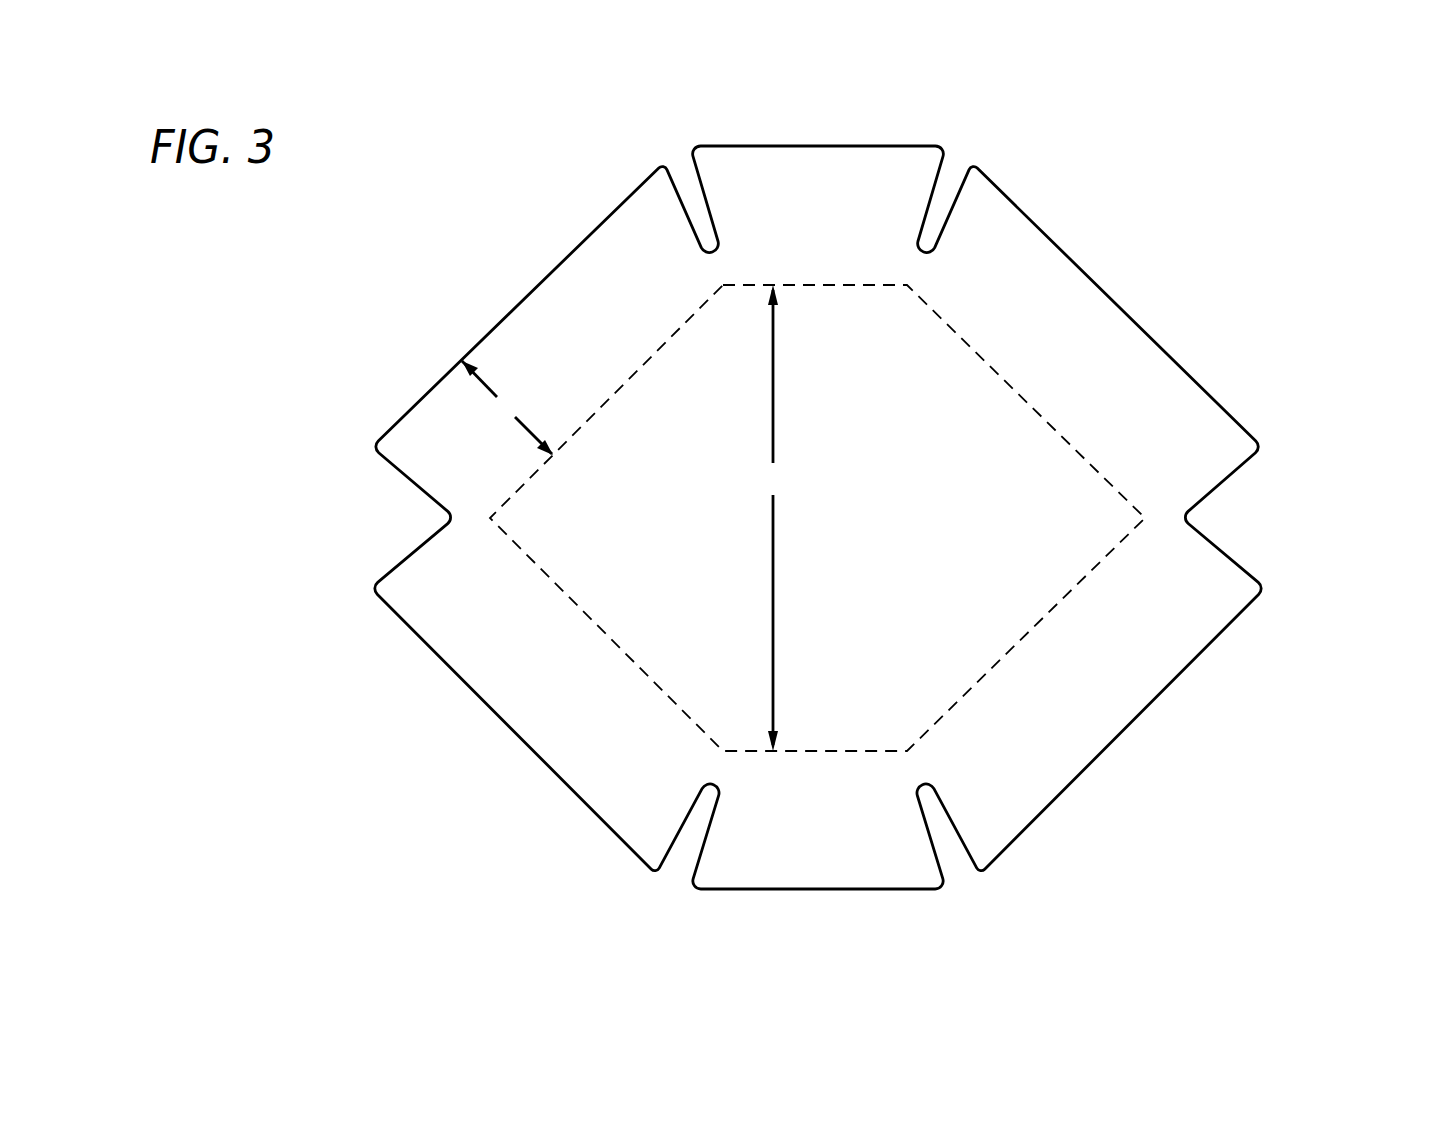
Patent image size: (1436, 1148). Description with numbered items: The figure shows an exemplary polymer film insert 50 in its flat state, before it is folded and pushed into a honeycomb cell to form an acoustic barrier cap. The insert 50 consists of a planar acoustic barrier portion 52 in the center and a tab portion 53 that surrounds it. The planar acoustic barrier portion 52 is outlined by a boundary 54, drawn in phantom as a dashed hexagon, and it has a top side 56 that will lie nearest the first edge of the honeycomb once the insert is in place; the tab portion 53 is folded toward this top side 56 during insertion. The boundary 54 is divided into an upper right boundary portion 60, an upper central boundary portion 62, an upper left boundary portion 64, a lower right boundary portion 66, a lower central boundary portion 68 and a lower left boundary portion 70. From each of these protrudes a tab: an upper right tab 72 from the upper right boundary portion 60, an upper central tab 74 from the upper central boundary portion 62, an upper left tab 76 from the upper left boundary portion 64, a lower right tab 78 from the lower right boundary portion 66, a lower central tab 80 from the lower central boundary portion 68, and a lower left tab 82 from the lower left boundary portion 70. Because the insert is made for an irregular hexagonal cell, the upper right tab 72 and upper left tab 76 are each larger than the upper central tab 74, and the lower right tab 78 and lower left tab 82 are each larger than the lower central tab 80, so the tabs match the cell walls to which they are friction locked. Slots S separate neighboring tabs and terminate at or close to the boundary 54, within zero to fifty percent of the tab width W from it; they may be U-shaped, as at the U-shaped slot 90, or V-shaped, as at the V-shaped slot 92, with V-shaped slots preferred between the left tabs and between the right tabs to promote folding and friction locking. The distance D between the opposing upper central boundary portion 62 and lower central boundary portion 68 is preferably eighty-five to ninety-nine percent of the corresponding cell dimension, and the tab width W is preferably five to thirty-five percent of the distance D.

The polymer film insert 50 is at (1268, 259).
The planar acoustic barrier portion 52 is at (817, 518).
The tab portion 53 is at (495, 615).
The boundary 54 is at (1127, 500).
The top side 56 is at (615, 448).
The upper right boundary portion 60 is at (1078, 448).
The upper central boundary portion 62 is at (820, 283).
The upper left boundary portion 64 is at (650, 357).
The lower right boundary portion 66 is at (1013, 650).
The lower central boundary portion 68 is at (820, 750).
The lower left boundary portion 70 is at (653, 680).
The upper right tab 72 is at (1083, 263).
The upper central tab 74 is at (783, 147).
The upper left tab 76 is at (535, 280).
The lower right tab 78 is at (1188, 668).
The lower central tab 80 is at (883, 889).
The lower left tab 82 is at (515, 733).
The U-shaped slot 90 is at (952, 167).
The V-shaped slot 92 is at (392, 518).
The slots S is at (682, 167).
The distance between opposing upper and lower central boundary portions D is at (775, 518).
The tab width W is at (507, 408).